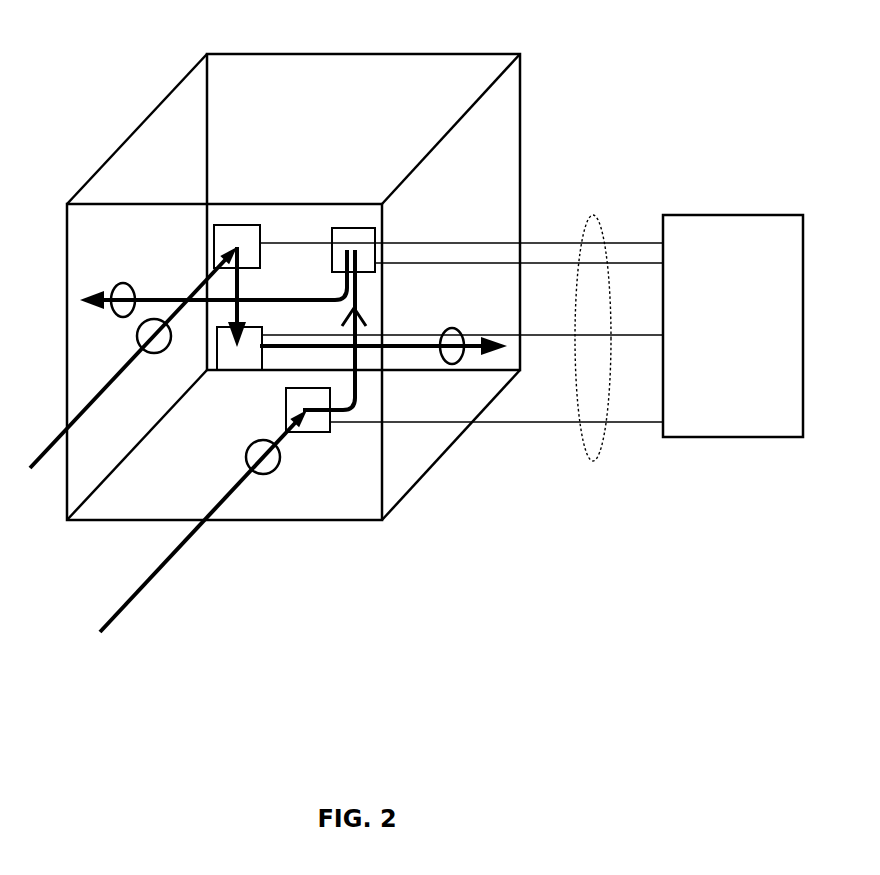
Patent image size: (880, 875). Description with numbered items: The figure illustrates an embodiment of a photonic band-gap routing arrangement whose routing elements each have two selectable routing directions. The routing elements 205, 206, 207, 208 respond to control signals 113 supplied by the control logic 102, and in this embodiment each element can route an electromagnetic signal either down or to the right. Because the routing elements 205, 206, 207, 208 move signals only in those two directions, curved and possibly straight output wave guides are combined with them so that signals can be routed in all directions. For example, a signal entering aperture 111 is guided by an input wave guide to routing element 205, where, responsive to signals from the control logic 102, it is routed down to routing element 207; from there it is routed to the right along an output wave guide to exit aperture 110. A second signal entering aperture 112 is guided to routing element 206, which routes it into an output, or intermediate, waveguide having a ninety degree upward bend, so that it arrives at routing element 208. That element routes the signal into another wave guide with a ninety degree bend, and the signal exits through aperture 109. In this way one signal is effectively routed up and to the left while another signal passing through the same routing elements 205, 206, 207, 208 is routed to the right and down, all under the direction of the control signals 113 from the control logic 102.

The control logic 102 is at (733, 326).
The exit aperture 109 is at (120, 283).
The exit aperture 110 is at (453, 364).
The entry aperture 111 is at (158, 355).
The entry aperture 112 is at (267, 476).
The control signals 113 is at (593, 462).
The routing element 205 is at (227, 222).
The routing element 206 is at (320, 433).
The routing element 207 is at (243, 372).
The routing element 208 is at (347, 228).